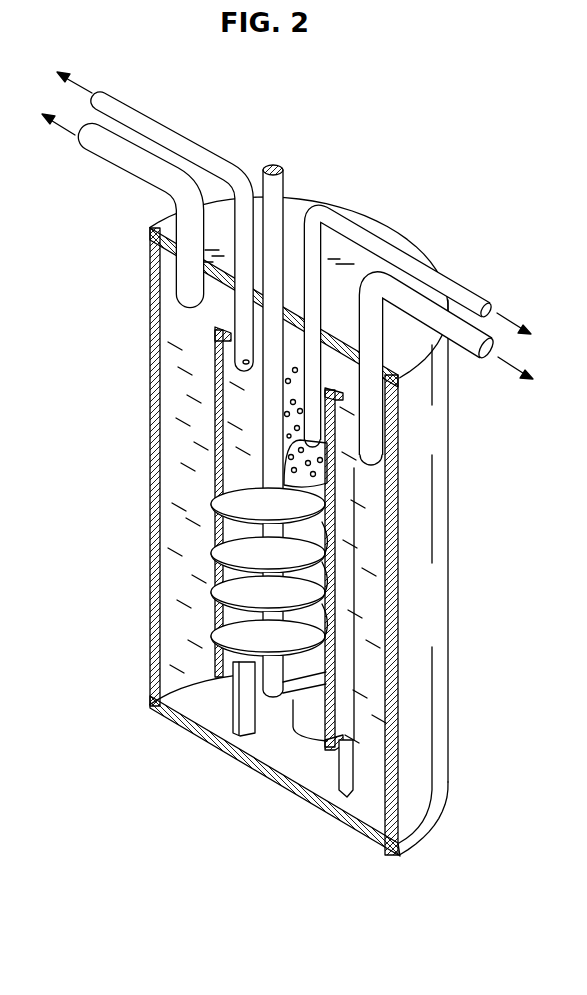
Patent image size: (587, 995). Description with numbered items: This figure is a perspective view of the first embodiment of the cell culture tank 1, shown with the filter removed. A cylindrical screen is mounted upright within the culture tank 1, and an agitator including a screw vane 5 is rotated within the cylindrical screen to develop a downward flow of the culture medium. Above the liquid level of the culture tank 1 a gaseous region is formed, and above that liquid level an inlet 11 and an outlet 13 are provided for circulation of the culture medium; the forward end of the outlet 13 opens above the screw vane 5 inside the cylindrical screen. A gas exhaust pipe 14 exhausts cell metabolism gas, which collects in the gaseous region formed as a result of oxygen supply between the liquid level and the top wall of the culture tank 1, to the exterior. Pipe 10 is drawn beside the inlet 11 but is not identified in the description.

The cell culture tank 1 is at (432, 592).
The screw vane 5 is at (217, 634).
The outlet pipe 10 is at (477, 293).
The inlet 11 is at (470, 343).
The outlet 13 is at (127, 113).
The gas exhaust pipe 14 is at (115, 160).